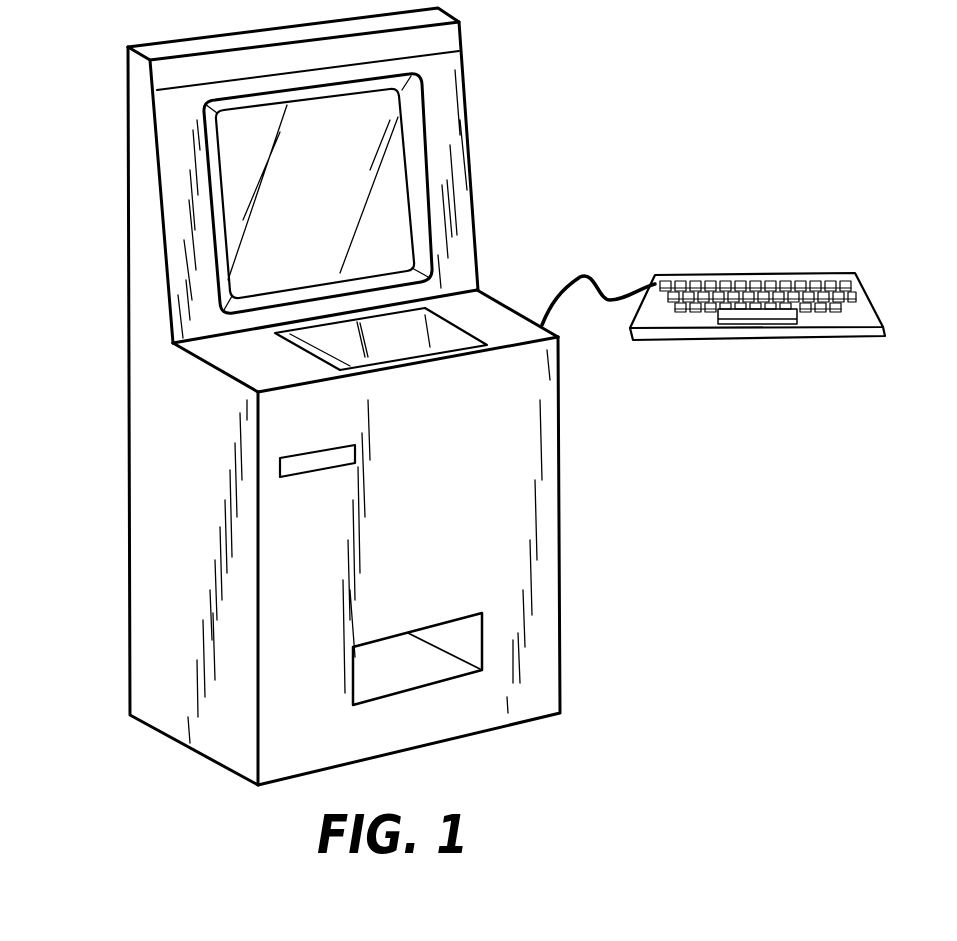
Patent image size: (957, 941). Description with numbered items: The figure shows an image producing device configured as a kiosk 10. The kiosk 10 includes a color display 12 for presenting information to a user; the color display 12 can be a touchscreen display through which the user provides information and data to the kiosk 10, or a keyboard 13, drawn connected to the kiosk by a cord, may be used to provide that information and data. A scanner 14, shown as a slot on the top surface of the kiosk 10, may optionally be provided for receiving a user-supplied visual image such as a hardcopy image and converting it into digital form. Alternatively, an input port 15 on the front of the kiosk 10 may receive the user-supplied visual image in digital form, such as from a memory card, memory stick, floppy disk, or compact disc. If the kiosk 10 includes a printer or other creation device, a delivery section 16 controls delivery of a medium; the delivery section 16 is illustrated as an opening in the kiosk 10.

The kiosk 10 is at (136, 134).
The color display 12 is at (393, 160).
The keyboard 13 is at (735, 272).
The scanner 14 is at (452, 334).
The input port 15 is at (333, 445).
The delivery section 16 is at (462, 636).